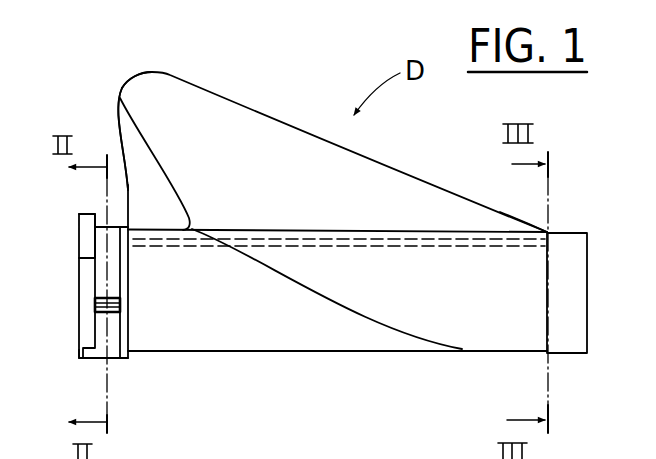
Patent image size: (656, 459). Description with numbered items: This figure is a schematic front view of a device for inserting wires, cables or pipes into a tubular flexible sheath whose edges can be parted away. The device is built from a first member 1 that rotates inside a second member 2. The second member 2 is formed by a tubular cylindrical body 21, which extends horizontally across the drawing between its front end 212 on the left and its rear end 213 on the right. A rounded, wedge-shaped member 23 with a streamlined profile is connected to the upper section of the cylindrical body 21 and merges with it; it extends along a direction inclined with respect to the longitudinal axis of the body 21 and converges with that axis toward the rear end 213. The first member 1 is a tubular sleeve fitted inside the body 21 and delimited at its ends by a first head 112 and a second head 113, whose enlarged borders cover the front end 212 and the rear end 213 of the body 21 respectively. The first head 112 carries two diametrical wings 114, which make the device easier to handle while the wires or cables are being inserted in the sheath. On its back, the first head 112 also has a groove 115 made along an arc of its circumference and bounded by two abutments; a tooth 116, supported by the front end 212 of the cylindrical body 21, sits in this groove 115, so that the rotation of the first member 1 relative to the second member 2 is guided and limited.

The first member 1 is at (178, 254).
The second member 2 is at (388, 213).
The tubular cylindrical body 21 is at (328, 340).
The wedge-shaped member 23 is at (188, 100).
The first head 112 is at (91, 361).
The second head 113 is at (577, 255).
The diametrical wings 114 is at (85, 290).
The groove 115 is at (100, 246).
The tooth 116 is at (113, 304).
The front end 212 is at (128, 212).
The rear end 213 is at (548, 232).